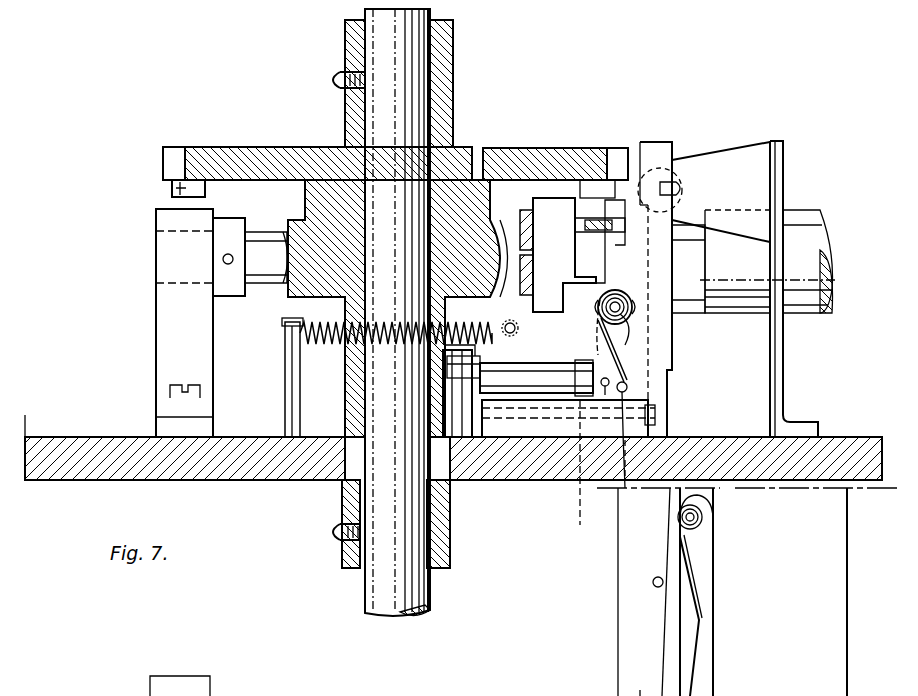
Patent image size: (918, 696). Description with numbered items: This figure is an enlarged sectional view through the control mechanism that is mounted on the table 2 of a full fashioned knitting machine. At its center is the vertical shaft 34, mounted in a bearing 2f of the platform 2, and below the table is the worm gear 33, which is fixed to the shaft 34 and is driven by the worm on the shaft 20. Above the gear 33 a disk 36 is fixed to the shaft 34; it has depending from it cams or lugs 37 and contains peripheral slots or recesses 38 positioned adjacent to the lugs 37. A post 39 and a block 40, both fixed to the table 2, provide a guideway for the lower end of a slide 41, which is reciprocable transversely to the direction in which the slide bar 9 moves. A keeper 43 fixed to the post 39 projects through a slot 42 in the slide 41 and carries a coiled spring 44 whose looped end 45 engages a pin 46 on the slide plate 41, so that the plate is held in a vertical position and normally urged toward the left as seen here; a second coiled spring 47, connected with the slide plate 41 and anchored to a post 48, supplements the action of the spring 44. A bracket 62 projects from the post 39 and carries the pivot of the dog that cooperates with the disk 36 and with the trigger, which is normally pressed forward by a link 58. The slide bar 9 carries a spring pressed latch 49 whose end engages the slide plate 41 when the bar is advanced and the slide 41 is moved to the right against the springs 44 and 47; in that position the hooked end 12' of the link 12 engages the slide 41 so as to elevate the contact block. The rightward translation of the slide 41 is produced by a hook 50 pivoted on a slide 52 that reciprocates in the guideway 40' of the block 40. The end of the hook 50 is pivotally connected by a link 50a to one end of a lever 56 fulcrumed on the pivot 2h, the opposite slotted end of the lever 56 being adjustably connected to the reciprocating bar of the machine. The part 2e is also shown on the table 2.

The table 2 is at (112, 470).
The upright bearing support 2e is at (160, 340).
The bearing 2f is at (360, 483).
The pivot 2h is at (455, 475).
The slide bar 9 is at (708, 690).
The link 12 is at (735, 418).
The hooked end 12' is at (679, 156).
The shaft 20 is at (262, 238).
The worm gear 33 is at (290, 298).
The shaft 34 is at (410, 30).
The disk 36 is at (518, 158).
The cams or lugs 37 is at (178, 186).
The peripheral slots or recesses 38 is at (618, 162).
The post 39 is at (552, 208).
The block 40 is at (594, 418).
The guideway 40' is at (567, 467).
The slide 41 is at (658, 152).
The slot 42 is at (650, 352).
The keeper 43 is at (618, 324).
The spring 44 is at (612, 300).
The looped end 45 is at (625, 440).
The pin 46 is at (628, 390).
The coiled spring 47 is at (306, 340).
The post 48 is at (290, 406).
The spring pressed latch 49 is at (700, 560).
The hook 50 is at (553, 375).
The link 50a is at (510, 380).
The slide 52 is at (470, 455).
The lever 56 is at (447, 362).
The link 58 is at (607, 687).
The bracket 62 is at (527, 218).